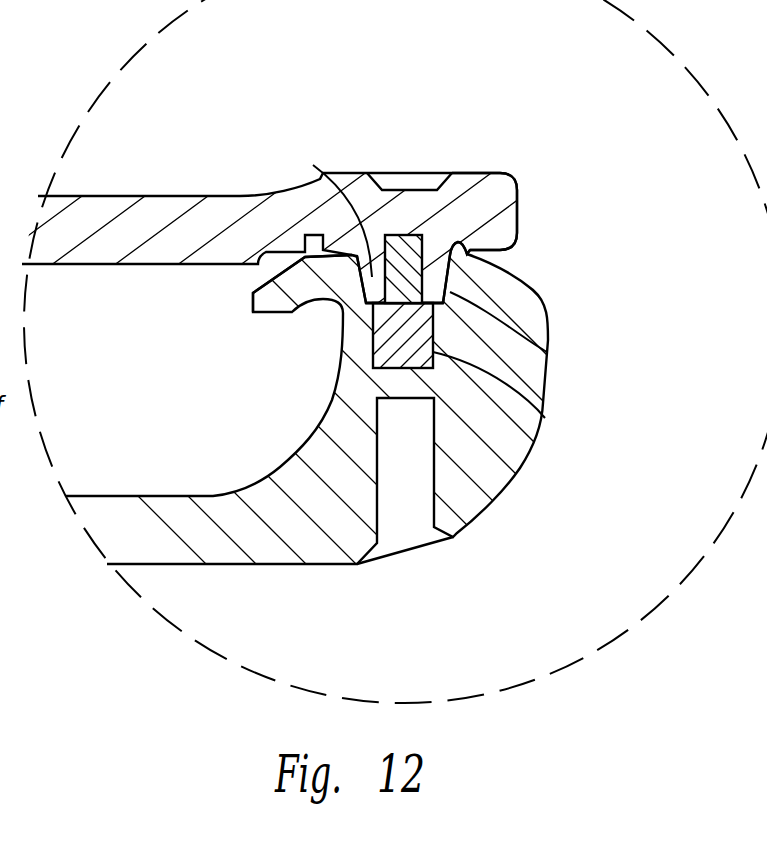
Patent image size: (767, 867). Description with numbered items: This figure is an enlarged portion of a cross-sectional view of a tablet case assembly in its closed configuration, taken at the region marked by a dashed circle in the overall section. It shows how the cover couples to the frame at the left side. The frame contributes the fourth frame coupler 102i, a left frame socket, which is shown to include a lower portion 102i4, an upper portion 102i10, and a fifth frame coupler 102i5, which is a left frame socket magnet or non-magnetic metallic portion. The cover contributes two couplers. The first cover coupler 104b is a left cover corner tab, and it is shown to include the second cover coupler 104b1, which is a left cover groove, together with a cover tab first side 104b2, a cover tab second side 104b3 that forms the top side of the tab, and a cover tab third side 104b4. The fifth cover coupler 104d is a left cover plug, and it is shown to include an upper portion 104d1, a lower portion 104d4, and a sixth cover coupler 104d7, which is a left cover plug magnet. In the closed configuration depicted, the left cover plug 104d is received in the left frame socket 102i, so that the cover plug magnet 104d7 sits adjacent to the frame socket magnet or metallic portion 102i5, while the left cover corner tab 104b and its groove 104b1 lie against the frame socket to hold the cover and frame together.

The fourth frame coupler 102i is at (373, 350).
The lower portion 102i4 is at (296, 315).
The fifth frame coupler 102i5 is at (545, 418).
The upper portion 102i10 is at (440, 300).
The first cover coupler 104b is at (492, 198).
The second cover coupler 104b1 is at (436, 292).
The cover tab first side 104b2 is at (485, 172).
The cover tab second side 104b3 is at (517, 215).
The cover tab third side 104b4 is at (472, 252).
The fifth cover coupler 104d is at (373, 277).
The upper portion 104d1 is at (547, 352).
The lower portion 104d4 is at (313, 165).
The sixth cover coupler 104d7 is at (405, 257).